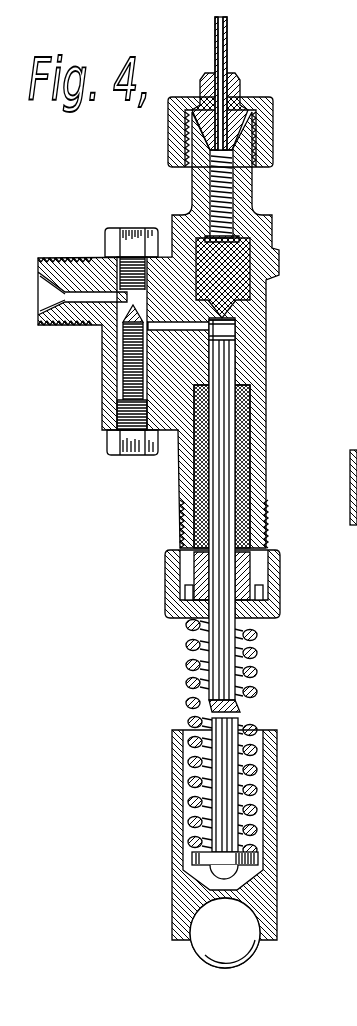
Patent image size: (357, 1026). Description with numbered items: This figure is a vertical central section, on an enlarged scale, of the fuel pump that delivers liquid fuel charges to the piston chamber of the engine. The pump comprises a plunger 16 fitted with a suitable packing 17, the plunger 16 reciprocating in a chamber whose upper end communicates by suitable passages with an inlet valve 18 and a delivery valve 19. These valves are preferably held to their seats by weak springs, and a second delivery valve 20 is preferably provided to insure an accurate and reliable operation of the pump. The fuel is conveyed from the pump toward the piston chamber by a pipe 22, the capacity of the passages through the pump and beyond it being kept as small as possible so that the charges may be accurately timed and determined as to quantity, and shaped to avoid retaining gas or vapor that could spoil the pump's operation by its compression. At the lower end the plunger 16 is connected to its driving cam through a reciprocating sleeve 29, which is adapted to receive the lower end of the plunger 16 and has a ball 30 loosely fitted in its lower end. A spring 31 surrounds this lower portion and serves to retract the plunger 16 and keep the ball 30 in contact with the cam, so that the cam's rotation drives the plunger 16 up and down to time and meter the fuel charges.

The plunger 16 is at (226, 362).
The packing 17 is at (245, 475).
The inlet valve 18 is at (122, 335).
The delivery valve 19 is at (267, 288).
The second delivery valve 20 is at (230, 197).
The pipe 22 is at (228, 40).
The reciprocating sleeve 29 is at (278, 872).
The ball 30 is at (213, 960).
The spring 31 is at (243, 693).